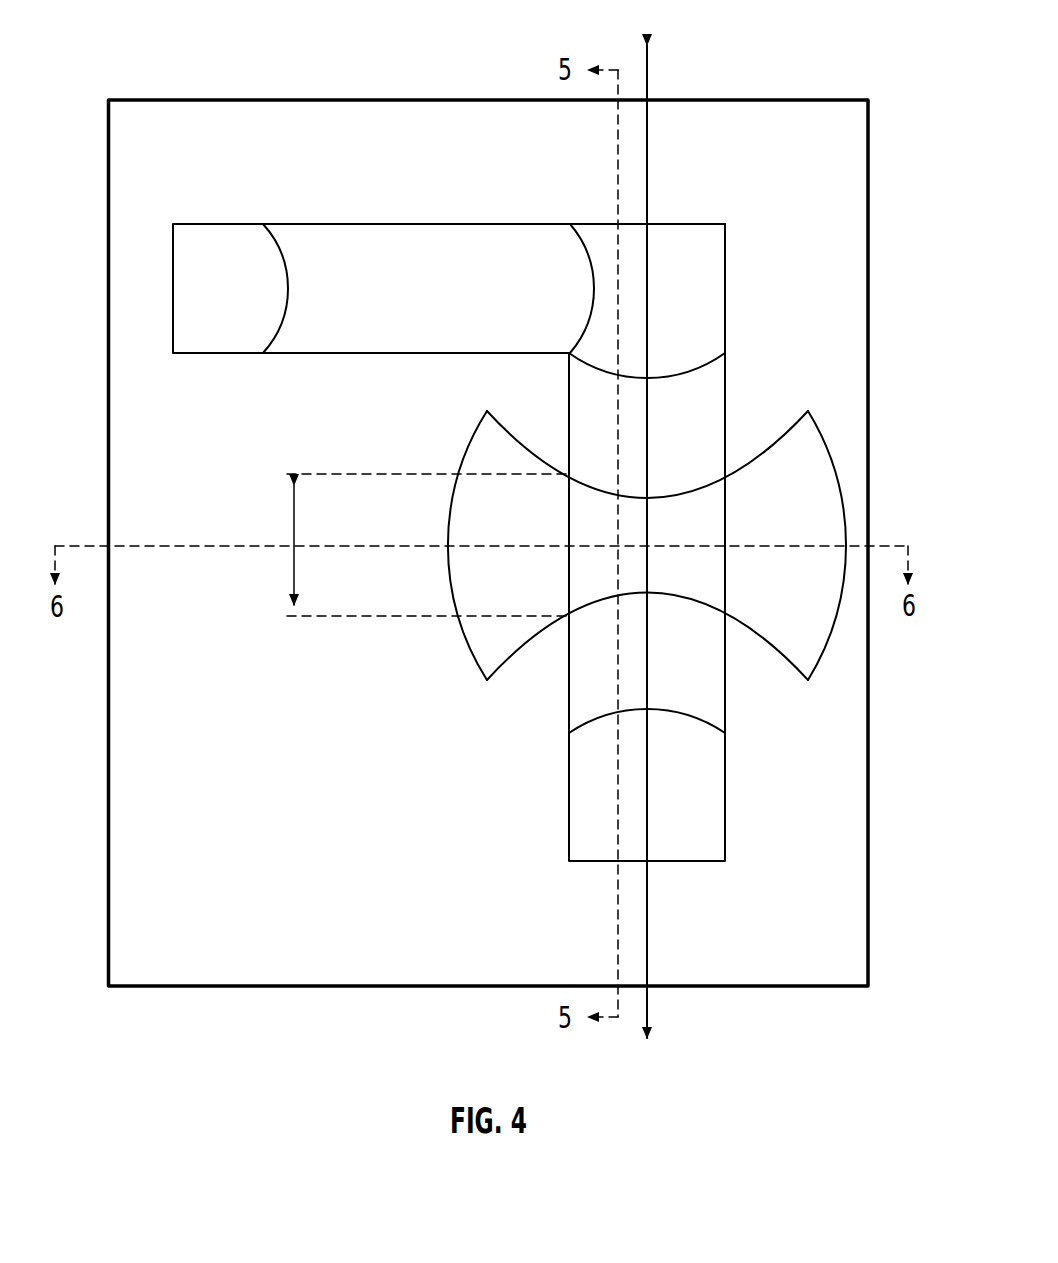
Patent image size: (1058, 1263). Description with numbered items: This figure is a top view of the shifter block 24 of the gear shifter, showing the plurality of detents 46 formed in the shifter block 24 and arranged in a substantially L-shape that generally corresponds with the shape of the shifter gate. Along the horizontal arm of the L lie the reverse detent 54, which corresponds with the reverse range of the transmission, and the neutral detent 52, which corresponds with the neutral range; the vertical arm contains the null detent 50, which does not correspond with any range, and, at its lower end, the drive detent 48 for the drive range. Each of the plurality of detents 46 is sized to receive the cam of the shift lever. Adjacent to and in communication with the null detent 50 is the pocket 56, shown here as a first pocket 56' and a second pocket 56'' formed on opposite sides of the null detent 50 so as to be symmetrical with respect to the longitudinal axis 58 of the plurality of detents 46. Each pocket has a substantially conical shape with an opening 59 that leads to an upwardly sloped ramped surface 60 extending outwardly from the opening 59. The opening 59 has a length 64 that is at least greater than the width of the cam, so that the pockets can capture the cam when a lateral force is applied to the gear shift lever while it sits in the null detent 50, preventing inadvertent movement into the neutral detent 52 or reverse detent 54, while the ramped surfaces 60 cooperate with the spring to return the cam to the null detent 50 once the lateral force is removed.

The shifter block 24 is at (303, 45).
The plurality of detents 46 is at (750, 176).
The drive detent 48 is at (707, 800).
The null detent 50 is at (749, 432).
The neutral detent 52 is at (708, 270).
The reverse detent 54 is at (221, 236).
The pocket 56 is at (664, 522).
The first pocket 56' is at (428, 545).
The second pocket 56'' is at (869, 539).
The longitudinal axis 58 is at (649, 904).
The opening 59 is at (574, 510).
The ramped surface 60 is at (468, 567).
The length 64 is at (292, 512).